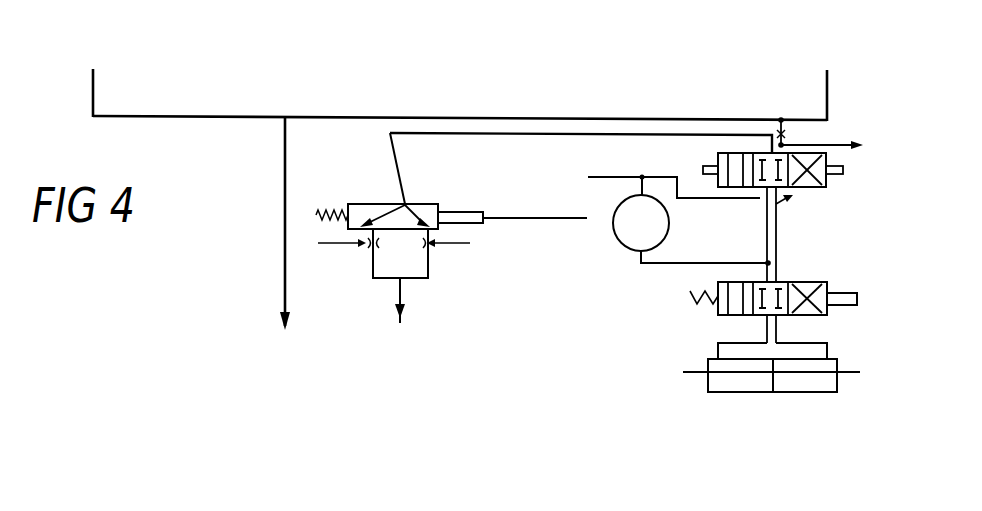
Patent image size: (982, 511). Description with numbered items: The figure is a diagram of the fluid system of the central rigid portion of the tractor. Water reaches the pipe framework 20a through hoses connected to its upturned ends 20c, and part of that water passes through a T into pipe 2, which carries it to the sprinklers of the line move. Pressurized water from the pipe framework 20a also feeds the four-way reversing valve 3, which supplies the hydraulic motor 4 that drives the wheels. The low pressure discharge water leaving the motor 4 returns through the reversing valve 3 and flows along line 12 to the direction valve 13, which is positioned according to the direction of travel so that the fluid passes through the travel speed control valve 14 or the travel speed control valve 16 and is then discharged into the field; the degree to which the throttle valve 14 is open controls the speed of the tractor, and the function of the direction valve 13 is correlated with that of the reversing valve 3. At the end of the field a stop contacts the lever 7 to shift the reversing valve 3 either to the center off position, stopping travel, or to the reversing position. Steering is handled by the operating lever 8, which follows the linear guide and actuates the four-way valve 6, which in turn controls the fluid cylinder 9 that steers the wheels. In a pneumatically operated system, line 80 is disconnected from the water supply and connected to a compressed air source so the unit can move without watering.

The pipe framework 20a is at (460, 94).
The upturned ends 20c is at (460, 71).
The pipe 2 is at (275, 193).
The line 12 is at (581, 168).
The direction valve 13 is at (451, 196).
The travel speed control valve 14 is at (435, 258).
The travel speed control valve 16 is at (361, 276).
The hydraulic motor 4 is at (679, 220).
The four-way reversing valve 3 is at (794, 265).
The lever 7 is at (799, 170).
The line 80 is at (826, 118).
The four-way valve 6 is at (765, 314).
The operating lever 8 is at (848, 268).
The fluid cylinder 9 is at (771, 390).